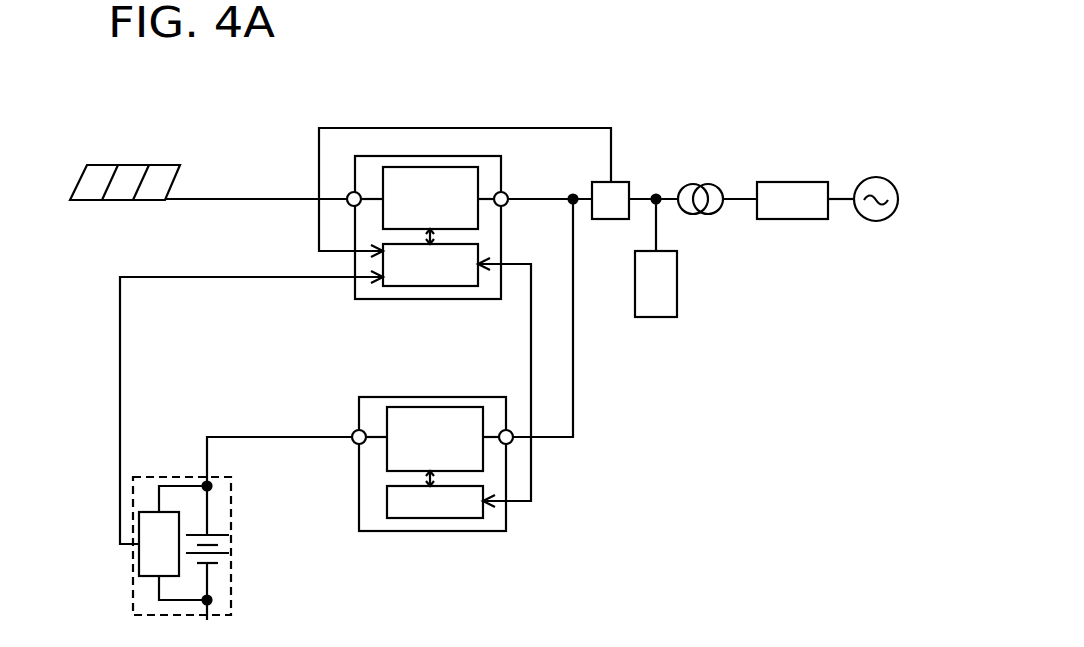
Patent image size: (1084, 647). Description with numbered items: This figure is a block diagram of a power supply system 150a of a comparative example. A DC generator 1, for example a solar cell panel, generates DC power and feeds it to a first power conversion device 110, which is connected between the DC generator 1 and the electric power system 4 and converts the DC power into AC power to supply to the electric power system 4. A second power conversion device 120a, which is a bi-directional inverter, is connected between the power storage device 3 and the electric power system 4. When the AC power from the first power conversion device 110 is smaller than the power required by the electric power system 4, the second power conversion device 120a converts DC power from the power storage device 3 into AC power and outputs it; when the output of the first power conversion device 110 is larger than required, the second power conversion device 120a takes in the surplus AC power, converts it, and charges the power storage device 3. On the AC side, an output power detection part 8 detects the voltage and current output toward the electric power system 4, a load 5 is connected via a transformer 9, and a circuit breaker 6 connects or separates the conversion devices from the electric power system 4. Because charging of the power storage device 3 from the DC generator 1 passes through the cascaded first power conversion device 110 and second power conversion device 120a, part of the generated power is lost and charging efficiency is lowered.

The power supply system 150a is at (878, 37).
The DC generator 1 is at (165, 163).
The first power conversion device 110 is at (408, 156).
The second power conversion device 120a is at (412, 397).
The output power detection part 8 is at (620, 182).
The transformer 9 is at (708, 186).
The circuit breaker 6 is at (793, 182).
The electric power system 4 is at (872, 177).
The load 5 is at (677, 283).
The power storage device 3 is at (132, 493).